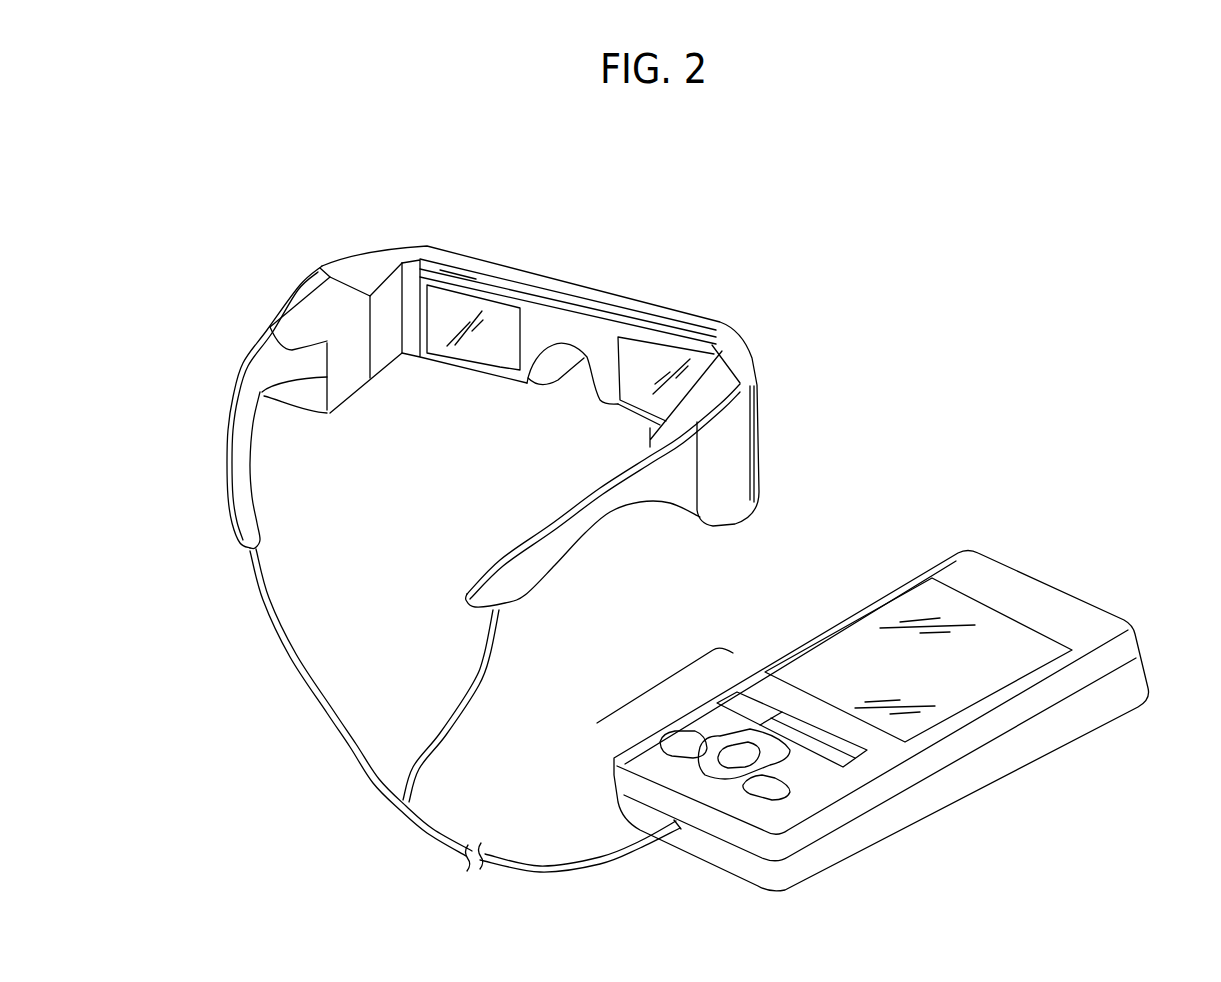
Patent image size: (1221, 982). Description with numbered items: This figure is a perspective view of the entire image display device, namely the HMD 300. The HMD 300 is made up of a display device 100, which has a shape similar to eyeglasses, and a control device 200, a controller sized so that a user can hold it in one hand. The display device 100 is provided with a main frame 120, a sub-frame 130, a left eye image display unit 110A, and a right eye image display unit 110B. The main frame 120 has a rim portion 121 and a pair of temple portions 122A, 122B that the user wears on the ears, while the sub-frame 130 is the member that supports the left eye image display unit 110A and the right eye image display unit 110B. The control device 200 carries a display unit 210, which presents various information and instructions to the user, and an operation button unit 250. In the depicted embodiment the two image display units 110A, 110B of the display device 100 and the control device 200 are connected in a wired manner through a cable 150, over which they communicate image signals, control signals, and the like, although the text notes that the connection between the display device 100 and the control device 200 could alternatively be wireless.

The display device 100 is at (760, 212).
The left eye image display unit 110A is at (478, 247).
The right eye image display unit 110B is at (689, 297).
The main frame 120 is at (366, 260).
The rim portion 121 is at (583, 282).
The temple portion 122A is at (230, 389).
The temple portion 122B is at (587, 526).
The sub-frame 130 is at (457, 275).
The cable 150 is at (530, 862).
The control device 200 is at (1074, 571).
The display unit 210 is at (883, 637).
The operation button unit 250 is at (667, 673).
The HMD 300 is at (873, 271).